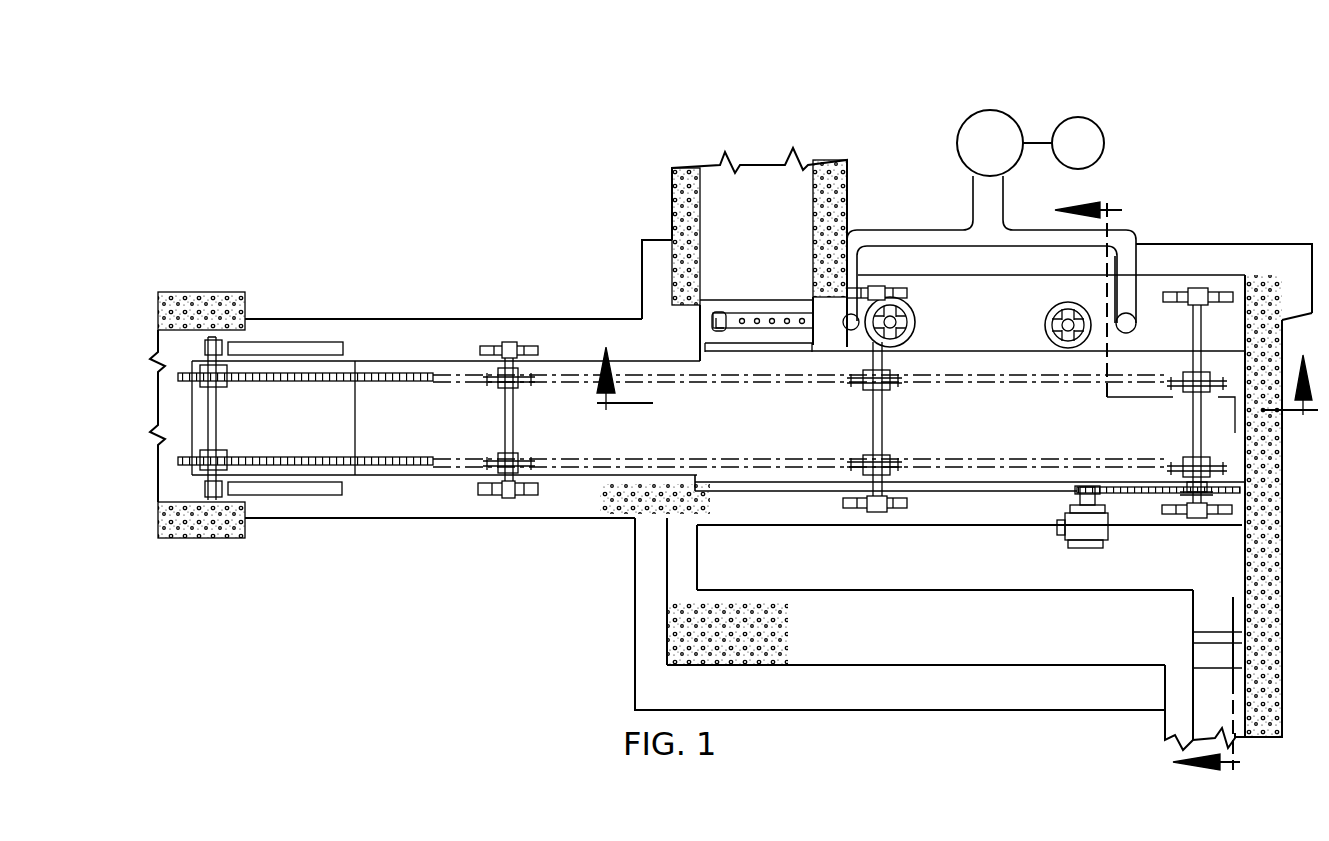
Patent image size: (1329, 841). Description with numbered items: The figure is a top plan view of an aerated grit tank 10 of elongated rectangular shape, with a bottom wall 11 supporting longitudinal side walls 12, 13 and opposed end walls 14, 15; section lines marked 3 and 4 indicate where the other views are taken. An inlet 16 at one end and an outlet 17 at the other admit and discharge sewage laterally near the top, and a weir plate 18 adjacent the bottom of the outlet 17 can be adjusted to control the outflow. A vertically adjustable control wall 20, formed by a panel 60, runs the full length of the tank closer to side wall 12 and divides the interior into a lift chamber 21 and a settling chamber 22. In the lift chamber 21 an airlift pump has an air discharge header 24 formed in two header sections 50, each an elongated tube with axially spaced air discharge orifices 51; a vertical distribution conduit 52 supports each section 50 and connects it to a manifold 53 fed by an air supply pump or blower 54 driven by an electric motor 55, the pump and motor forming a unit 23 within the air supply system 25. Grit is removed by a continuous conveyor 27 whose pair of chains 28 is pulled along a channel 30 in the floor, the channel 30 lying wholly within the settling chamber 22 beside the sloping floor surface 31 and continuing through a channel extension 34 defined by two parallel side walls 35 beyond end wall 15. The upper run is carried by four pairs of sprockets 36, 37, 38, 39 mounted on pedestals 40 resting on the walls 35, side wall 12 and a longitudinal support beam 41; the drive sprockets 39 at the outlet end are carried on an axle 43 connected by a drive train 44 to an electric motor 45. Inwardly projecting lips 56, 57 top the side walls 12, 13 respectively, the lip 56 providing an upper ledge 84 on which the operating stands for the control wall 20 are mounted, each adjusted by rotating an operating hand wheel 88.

The aerated grit tank 10 is at (686, 569).
The bottom wall or floor 11 is at (1169, 566).
The side wall 12 is at (1165, 270).
The side wall 13 is at (880, 667).
The end wall 14 is at (1289, 282).
The end wall 15 is at (665, 547).
The inlet 16 is at (723, 197).
The outlet 17 is at (1219, 697).
The weir plate 18 is at (1218, 620).
The control wall 20 is at (757, 352).
The lift chamber 21 is at (708, 311).
The settling chamber 22 is at (808, 551).
The pump and motor unit 23 is at (1037, 116).
The air discharge header 24 is at (765, 309).
The air supply system 25 is at (1021, 229).
The continuous conveyor 27 is at (181, 362).
The conveyor chains 28 is at (418, 374).
The channel 30 is at (1027, 477).
The settling chamber floor surface 31 is at (1080, 581).
The channel extension 34 is at (373, 398).
The side walls of channel extension 35 is at (458, 325).
The sprockets 36 is at (216, 385).
The sprockets 37 is at (528, 380).
The sprockets 38 is at (893, 380).
The drive sprockets 39 is at (1185, 385).
The pedestals 40 is at (528, 345).
The support beam 41 is at (750, 510).
The axle 43 is at (1197, 325).
The drive train 44 is at (1148, 494).
The electric motor 45 is at (1062, 528).
The header sections 50 is at (800, 312).
The air discharge orifices 51 is at (757, 318).
The vertical distribution conduit 52 is at (848, 325).
The manifold 53 is at (1122, 242).
The air supply pump or blower 54 is at (980, 112).
The electric motor 55 is at (1096, 128).
The inwardly projecting lip 56 is at (1305, 328).
The inwardly projecting lip 57 is at (938, 590).
The panel 60 is at (800, 352).
The upper ledge 84 is at (972, 331).
The operating hand wheel 88 is at (912, 305).
The section line 3- 3 is at (955, 378).
The section line 4- 4 is at (1147, 484).